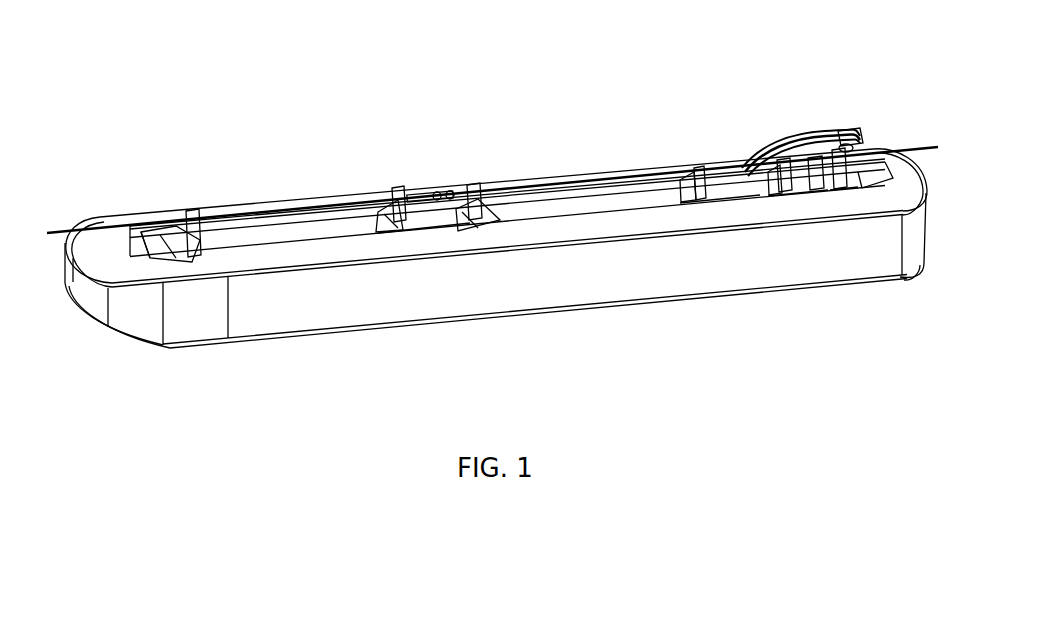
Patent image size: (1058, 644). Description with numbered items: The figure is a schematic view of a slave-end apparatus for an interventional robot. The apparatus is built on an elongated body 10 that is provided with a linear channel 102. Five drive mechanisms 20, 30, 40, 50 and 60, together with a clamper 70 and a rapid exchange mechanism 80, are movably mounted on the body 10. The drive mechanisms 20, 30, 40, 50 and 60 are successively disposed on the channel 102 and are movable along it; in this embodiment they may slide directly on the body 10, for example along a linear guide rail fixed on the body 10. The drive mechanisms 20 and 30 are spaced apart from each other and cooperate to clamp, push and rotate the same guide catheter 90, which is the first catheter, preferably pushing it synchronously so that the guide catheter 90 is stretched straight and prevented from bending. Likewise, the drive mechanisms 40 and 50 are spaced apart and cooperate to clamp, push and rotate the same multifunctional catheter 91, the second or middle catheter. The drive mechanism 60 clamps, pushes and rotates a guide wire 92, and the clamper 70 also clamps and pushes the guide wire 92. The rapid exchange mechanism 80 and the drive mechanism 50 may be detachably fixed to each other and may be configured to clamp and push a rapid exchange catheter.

The body 10 is at (312, 310).
The drive mechanism 20 is at (197, 247).
The drive mechanism 30 is at (402, 230).
The drive mechanism 40 is at (487, 213).
The drive mechanism 50 is at (695, 193).
The drive mechanism 60 is at (817, 187).
The clamper 70 is at (847, 200).
The rapid exchange mechanism 80 is at (830, 133).
The guide catheter 90 is at (323, 210).
The multifunctional catheter 91 is at (597, 183).
The guide wire 92 is at (915, 147).
The channel 102 is at (552, 210).